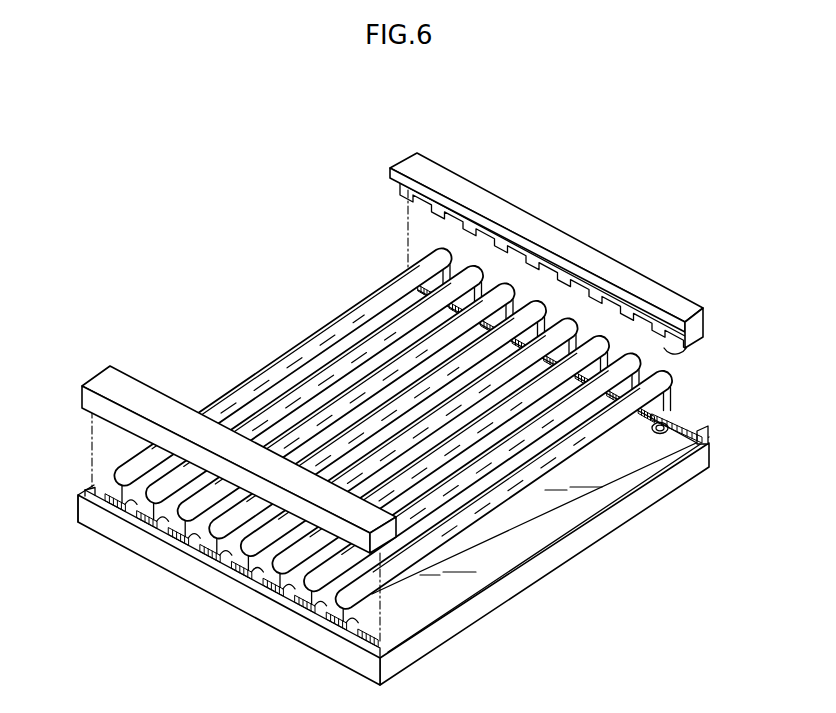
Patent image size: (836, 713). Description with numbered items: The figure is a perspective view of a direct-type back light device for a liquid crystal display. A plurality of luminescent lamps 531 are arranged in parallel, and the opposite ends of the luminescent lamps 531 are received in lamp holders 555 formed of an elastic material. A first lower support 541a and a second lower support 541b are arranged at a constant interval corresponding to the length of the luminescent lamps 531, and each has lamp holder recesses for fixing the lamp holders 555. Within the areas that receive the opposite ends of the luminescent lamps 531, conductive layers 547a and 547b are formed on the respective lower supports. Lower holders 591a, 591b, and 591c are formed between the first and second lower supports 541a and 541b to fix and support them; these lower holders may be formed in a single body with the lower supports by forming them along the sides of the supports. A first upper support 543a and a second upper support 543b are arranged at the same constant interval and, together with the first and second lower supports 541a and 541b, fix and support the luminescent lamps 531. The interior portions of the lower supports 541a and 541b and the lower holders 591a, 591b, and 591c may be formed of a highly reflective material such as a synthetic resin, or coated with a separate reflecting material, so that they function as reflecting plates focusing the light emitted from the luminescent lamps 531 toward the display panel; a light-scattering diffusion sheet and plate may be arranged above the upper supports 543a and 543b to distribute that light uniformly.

The luminescent lamps 531 is at (316, 341).
The first lower support 541a is at (223, 593).
The second lower support 541b is at (683, 418).
The first upper support 543a is at (172, 408).
The second upper support 543b is at (554, 237).
The conductive layer 547a is at (360, 648).
The conductive layer 547b is at (707, 431).
The lamp holders 555 is at (680, 357).
The lower holder 591a is at (512, 535).
The lower holder 591b is at (107, 477).
The lower holder 591c is at (490, 600).